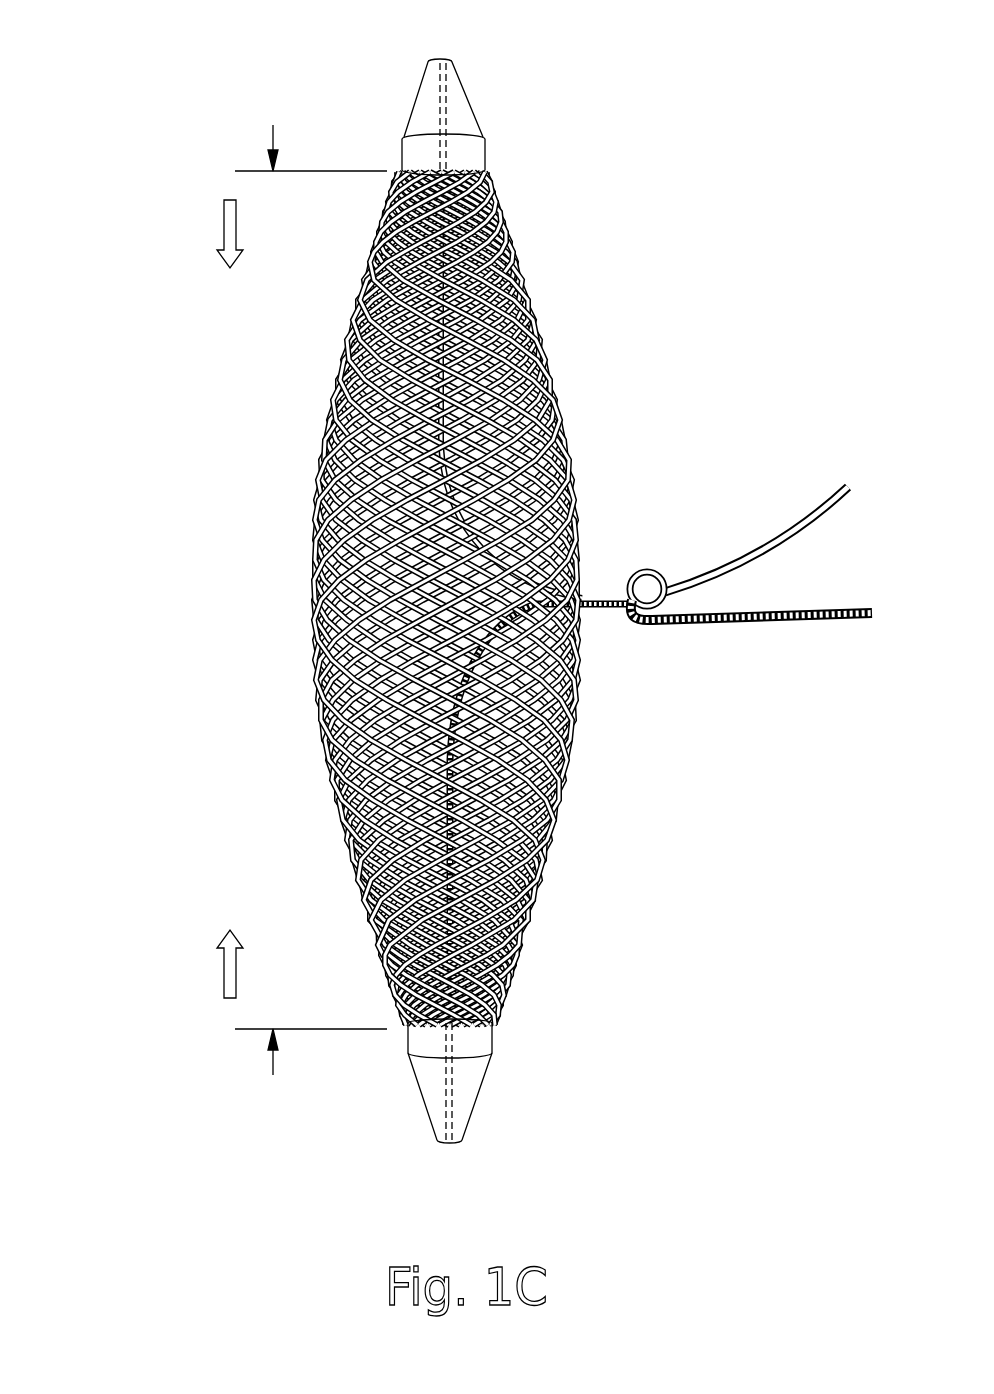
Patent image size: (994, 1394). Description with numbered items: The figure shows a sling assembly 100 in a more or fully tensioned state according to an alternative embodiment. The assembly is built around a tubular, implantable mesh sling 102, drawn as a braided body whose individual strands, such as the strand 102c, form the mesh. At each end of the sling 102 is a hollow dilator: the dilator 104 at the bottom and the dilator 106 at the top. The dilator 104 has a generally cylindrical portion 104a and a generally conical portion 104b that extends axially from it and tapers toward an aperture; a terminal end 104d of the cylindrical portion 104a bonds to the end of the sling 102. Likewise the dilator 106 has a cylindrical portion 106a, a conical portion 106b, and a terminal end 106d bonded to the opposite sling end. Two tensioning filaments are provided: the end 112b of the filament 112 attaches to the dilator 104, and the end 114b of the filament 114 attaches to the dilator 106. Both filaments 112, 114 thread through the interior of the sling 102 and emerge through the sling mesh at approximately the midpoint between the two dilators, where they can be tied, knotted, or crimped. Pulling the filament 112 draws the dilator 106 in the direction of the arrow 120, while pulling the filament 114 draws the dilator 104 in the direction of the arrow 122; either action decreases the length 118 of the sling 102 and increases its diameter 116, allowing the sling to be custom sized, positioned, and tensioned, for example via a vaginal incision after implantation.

The sling assembly 100 is at (536, 593).
The sling 102 is at (389, 598).
The filament strand of braided body 102c is at (352, 703).
The dilator 104 is at (450, 1068).
The cylindrical portion 104a is at (487, 1040).
The conical portion 104b is at (420, 1110).
The terminal end 104d is at (497, 1002).
The dilator 106 is at (445, 121).
The cylindrical portion 106a is at (472, 153).
The conical portion 106b is at (453, 92).
The terminal end 106d is at (494, 189).
The tensioning filament 112 is at (750, 627).
The end of filament 112 112b is at (447, 1143).
The tensioning filament 114 is at (750, 558).
The end of filament 114 114b is at (443, 60).
The diameter 116 is at (332, 346).
The length 118 is at (270, 134).
The arrow 120 is at (224, 226).
The arrow 122 is at (224, 965).